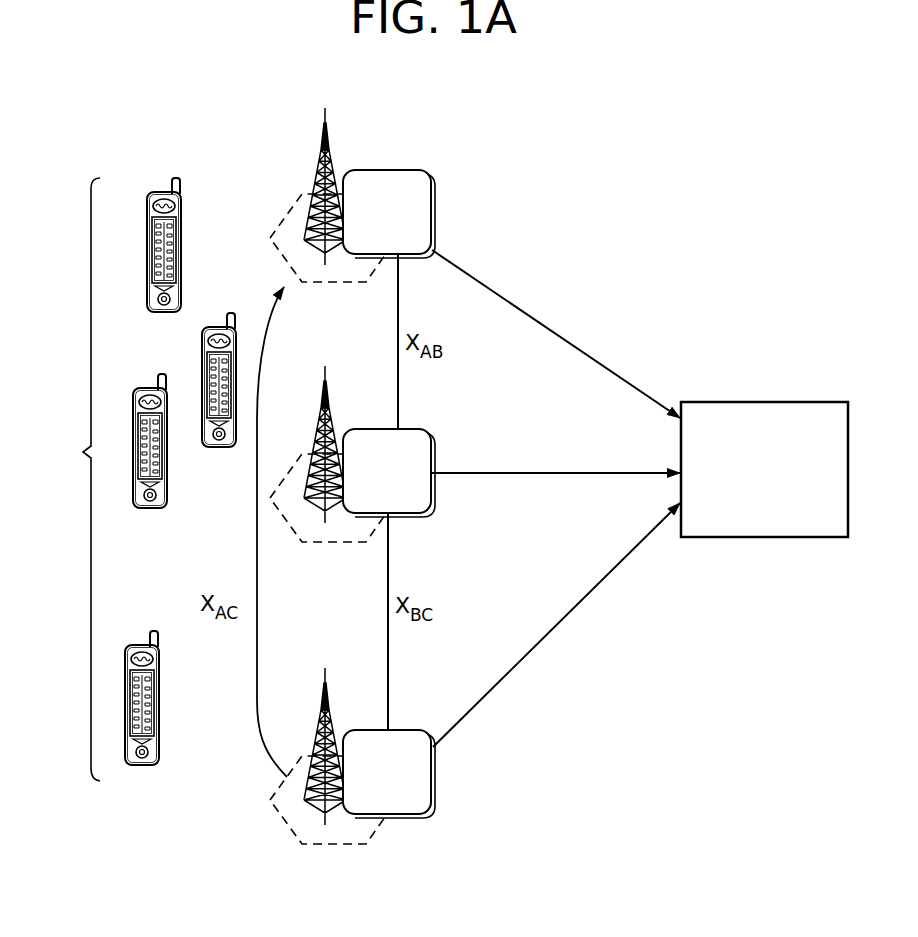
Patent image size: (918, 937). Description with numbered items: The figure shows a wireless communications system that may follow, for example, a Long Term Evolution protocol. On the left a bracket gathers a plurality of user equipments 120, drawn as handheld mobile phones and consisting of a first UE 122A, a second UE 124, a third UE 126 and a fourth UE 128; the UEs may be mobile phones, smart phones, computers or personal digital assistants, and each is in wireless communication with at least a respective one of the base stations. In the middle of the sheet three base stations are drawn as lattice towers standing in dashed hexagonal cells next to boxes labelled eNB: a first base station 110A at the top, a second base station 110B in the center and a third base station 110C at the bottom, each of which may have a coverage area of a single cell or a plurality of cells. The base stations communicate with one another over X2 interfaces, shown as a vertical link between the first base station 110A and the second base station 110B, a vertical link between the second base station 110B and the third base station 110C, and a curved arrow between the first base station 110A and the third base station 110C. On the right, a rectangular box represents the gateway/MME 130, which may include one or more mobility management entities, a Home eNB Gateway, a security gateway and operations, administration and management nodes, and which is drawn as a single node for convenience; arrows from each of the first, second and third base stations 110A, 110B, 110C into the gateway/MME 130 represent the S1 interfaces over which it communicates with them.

The plurality of user equipments 120 is at (69, 479).
The first UE 122A is at (181, 209).
The second UE 124 is at (201, 337).
The third UE 126 is at (138, 507).
The fourth UE 128 is at (127, 756).
The first base station 110A is at (437, 200).
The second base station 110B is at (437, 447).
The third base station 110C is at (405, 728).
The gateway/MME 130 is at (711, 402).